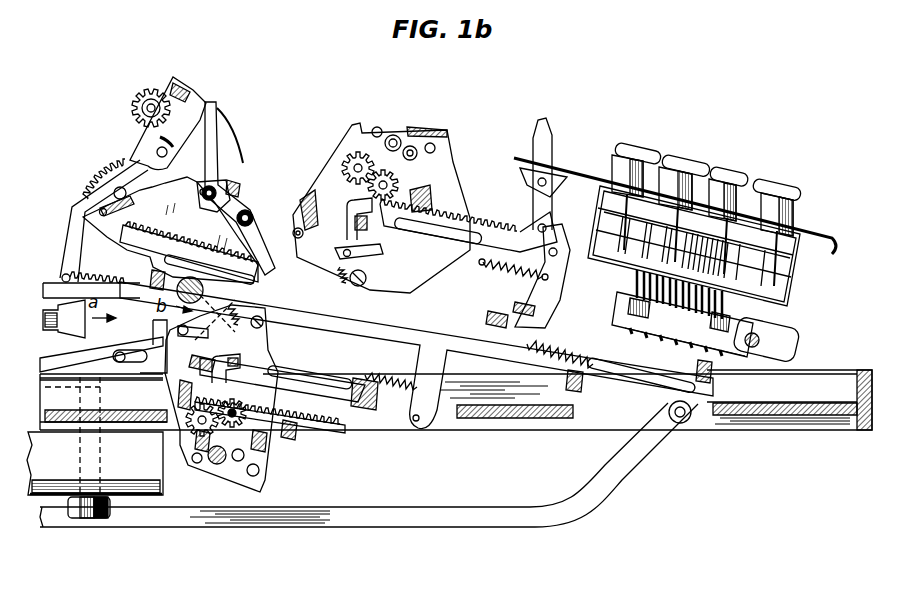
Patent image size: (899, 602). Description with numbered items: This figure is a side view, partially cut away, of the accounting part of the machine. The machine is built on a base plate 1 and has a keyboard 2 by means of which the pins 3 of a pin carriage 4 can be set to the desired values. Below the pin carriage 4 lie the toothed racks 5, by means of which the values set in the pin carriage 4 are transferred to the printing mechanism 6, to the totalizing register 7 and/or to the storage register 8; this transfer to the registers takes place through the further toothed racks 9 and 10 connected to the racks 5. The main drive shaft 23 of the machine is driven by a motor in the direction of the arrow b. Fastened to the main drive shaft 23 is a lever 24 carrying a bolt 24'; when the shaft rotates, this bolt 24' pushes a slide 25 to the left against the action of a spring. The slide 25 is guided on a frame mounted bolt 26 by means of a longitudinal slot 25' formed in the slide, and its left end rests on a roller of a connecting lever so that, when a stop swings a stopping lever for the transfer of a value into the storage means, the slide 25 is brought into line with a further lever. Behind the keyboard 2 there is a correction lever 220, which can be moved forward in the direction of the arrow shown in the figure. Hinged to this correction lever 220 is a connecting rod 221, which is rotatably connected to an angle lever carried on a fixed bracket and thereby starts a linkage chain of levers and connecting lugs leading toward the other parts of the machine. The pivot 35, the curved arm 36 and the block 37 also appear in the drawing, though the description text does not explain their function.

The base plate 1 is at (522, 410).
The keyboard 2 is at (713, 190).
The pins 3 is at (650, 290).
The pin carriage 4 is at (757, 330).
The toothed racks 5 is at (447, 323).
The printing mechanism 6 is at (133, 107).
The totalizing register 7 is at (362, 193).
The storage register 8 is at (245, 424).
The toothed rack 9 is at (481, 224).
The toothed rack 10 is at (357, 428).
The main drive shaft 23 is at (188, 276).
The lever 24 is at (237, 188).
The bolt 24' is at (221, 398).
The slide 25 is at (92, 346).
The longitudinal slot 25' is at (128, 340).
The frame mounted bolt 26 is at (120, 362).
The pivot 35 is at (684, 424).
The curved arm 36 is at (362, 528).
The base block 37 is at (92, 458).
The correction lever 220 is at (552, 143).
The connecting rod 221 is at (430, 272).